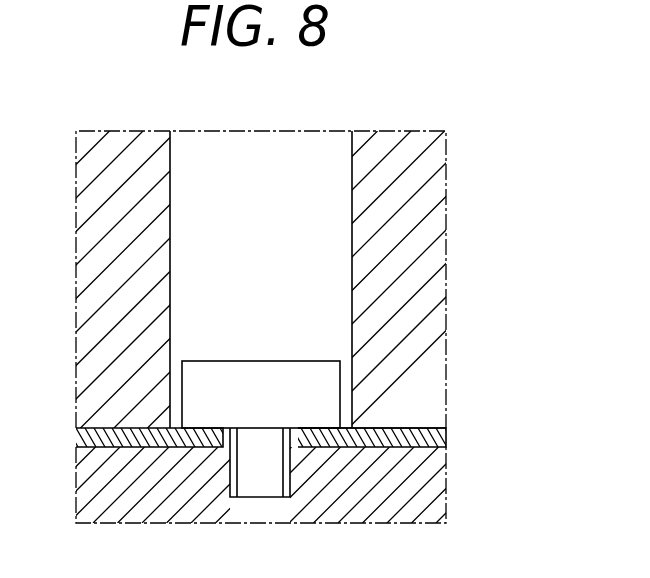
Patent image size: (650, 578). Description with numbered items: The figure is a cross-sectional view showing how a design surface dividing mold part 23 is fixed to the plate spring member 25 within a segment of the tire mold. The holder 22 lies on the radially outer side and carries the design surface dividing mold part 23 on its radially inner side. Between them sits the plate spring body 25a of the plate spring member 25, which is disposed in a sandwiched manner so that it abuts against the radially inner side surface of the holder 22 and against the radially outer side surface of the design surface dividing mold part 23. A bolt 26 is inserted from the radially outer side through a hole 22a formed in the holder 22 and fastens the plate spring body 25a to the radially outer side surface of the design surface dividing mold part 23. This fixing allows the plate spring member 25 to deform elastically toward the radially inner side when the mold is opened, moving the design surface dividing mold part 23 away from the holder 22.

The holder 22 is at (447, 257).
The hole 22a is at (352, 203).
The design surface dividing mold part 23 is at (447, 483).
The plate spring member 25 is at (447, 435).
The plate spring body 25a is at (397, 430).
The bolt 26 is at (249, 352).